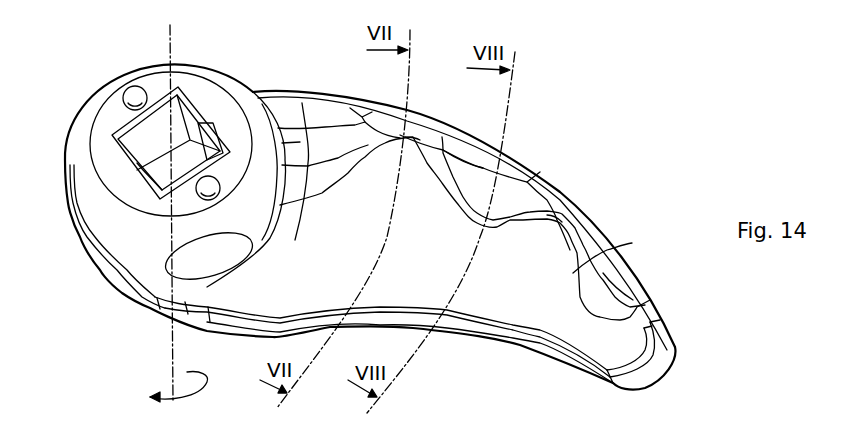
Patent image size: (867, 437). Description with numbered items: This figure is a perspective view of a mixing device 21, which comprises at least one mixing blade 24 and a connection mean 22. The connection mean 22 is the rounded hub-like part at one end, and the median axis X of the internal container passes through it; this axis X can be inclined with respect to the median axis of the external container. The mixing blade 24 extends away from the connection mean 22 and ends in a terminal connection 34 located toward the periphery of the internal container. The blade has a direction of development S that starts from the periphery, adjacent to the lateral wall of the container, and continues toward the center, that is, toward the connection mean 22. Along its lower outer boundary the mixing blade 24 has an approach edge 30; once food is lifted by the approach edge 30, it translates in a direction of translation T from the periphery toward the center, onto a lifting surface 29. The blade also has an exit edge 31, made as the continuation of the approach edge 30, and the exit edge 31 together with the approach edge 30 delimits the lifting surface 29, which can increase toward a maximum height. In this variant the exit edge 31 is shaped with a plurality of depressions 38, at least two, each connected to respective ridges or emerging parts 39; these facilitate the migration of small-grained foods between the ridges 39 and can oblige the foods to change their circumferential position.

The mixing device 21 is at (573, 133).
The connection mean 22 is at (106, 88).
The mixing blade 24 is at (630, 195).
The lifting surface 29 is at (352, 215).
The approach edge 30 is at (513, 347).
The exit edge 31 is at (362, 117).
The terminal connection 34 is at (672, 372).
The depressions 38 is at (465, 178).
The ridges or emerging parts 39 is at (413, 137).
The median axis X is at (168, 40).
The direction of development S is at (527, 277).
The direction of translation T is at (480, 362).